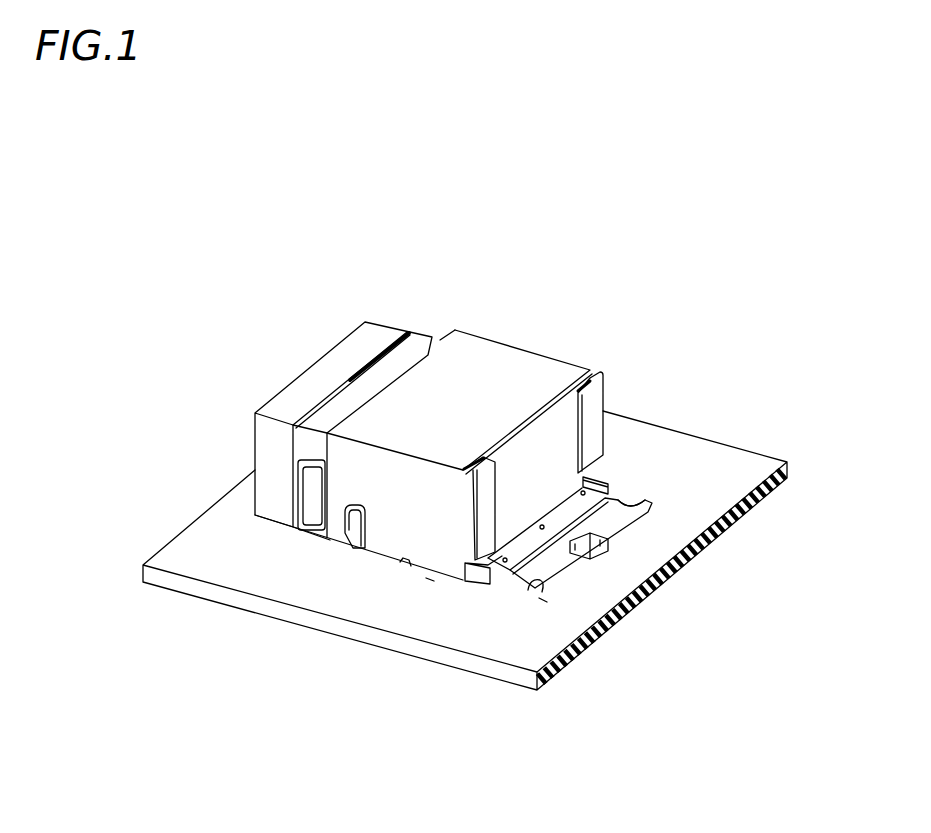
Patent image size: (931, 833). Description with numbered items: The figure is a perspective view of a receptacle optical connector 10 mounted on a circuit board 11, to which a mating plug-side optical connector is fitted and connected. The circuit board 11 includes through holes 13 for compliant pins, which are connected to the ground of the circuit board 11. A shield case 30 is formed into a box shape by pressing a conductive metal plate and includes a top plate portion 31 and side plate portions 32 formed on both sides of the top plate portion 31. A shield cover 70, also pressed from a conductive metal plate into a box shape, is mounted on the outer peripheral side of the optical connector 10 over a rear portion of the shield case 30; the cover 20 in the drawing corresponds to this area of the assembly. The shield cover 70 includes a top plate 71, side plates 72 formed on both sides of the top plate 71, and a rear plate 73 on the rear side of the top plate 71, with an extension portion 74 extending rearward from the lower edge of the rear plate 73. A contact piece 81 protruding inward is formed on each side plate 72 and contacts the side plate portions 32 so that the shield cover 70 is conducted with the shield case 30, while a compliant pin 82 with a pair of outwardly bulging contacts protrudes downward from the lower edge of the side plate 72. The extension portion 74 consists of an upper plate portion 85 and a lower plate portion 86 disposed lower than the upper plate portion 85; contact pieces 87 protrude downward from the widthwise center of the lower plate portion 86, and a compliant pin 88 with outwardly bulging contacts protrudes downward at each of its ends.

The optical connector 10 is at (479, 290).
The circuit board 11 is at (317, 627).
The through holes for compliant pins 13 is at (430, 580).
The cover 20 is at (365, 326).
The shield case 30 is at (433, 332).
The top plate portion 31 is at (370, 383).
The side plate portions 32 is at (312, 443).
The shield cover 70 is at (541, 339).
The top plate 71 is at (493, 352).
The side plates 72 is at (445, 550).
The rear plate 73 is at (563, 418).
The extension portion 74 is at (615, 495).
The contact piece 81 is at (337, 547).
The compliant pin 82 is at (407, 570).
The upper plate portion 85 is at (565, 500).
The lower plate portion 86 is at (633, 527).
The contact pieces 87 is at (617, 560).
The compliant pin 88 is at (533, 592).